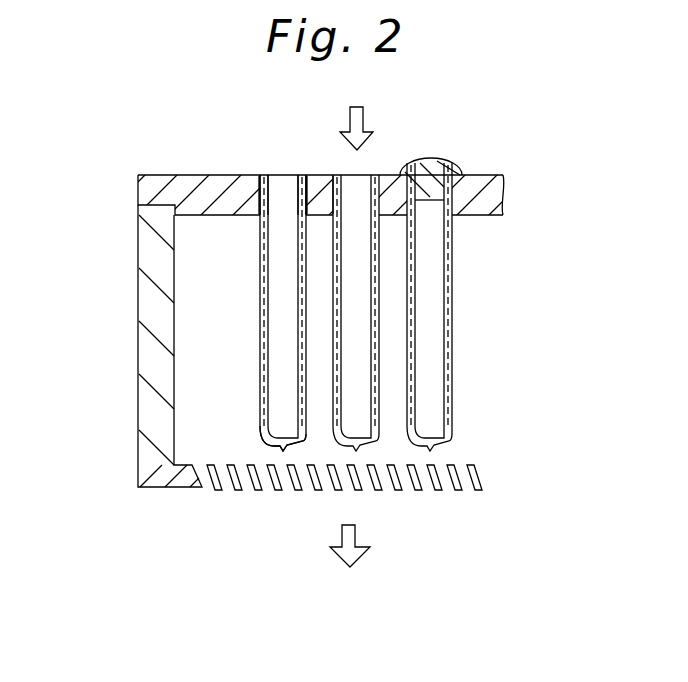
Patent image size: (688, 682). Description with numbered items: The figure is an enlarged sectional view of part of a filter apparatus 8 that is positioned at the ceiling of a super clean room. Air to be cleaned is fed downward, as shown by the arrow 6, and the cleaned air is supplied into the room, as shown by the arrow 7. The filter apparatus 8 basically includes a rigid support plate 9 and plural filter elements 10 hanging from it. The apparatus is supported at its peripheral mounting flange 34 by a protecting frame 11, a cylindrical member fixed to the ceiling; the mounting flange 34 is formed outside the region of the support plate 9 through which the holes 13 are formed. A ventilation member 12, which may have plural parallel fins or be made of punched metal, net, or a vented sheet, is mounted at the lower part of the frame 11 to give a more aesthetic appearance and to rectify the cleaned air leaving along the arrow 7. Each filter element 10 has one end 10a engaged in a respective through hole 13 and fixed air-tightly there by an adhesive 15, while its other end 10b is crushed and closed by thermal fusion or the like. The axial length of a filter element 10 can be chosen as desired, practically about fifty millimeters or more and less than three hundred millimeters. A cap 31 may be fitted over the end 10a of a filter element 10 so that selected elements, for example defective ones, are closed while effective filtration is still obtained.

The support plate 9 is at (187, 174).
The mounting flange 34 is at (207, 174).
The protecting frame 11 is at (153, 313).
The filter element 10 is at (263, 272).
The one end of filter element 10a is at (273, 176).
The other end of filter element 10b is at (270, 444).
The adhesive 15 is at (259, 214).
The through hole 13 is at (318, 175).
The filter apparatus 8 is at (332, 152).
The cap 31 is at (430, 160).
The arrow indicating air to be cleaned 6 is at (363, 118).
The ventilation member 12 is at (253, 491).
The arrow indicating cleaned air 7 is at (352, 540).